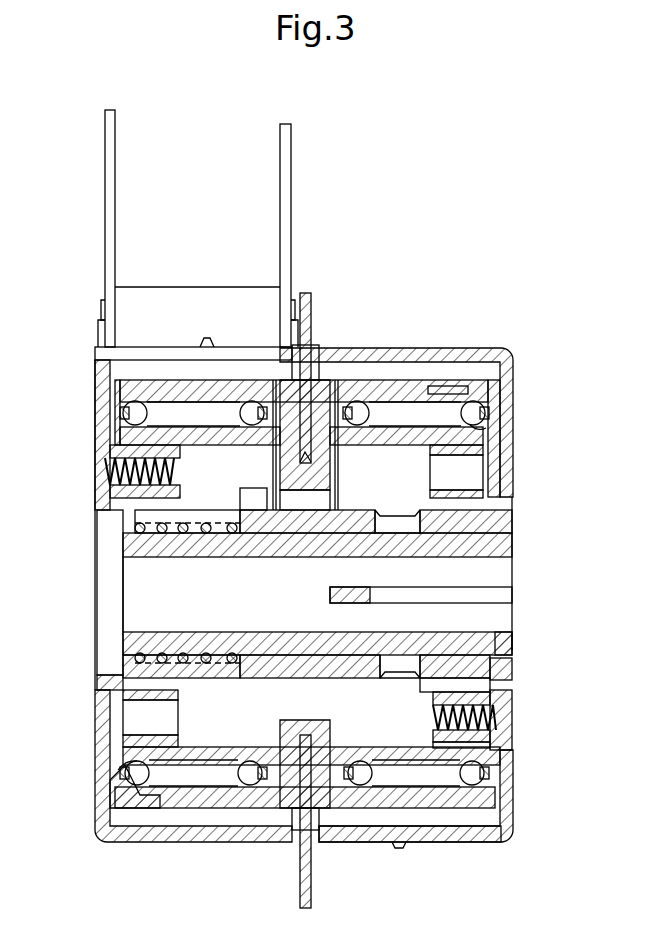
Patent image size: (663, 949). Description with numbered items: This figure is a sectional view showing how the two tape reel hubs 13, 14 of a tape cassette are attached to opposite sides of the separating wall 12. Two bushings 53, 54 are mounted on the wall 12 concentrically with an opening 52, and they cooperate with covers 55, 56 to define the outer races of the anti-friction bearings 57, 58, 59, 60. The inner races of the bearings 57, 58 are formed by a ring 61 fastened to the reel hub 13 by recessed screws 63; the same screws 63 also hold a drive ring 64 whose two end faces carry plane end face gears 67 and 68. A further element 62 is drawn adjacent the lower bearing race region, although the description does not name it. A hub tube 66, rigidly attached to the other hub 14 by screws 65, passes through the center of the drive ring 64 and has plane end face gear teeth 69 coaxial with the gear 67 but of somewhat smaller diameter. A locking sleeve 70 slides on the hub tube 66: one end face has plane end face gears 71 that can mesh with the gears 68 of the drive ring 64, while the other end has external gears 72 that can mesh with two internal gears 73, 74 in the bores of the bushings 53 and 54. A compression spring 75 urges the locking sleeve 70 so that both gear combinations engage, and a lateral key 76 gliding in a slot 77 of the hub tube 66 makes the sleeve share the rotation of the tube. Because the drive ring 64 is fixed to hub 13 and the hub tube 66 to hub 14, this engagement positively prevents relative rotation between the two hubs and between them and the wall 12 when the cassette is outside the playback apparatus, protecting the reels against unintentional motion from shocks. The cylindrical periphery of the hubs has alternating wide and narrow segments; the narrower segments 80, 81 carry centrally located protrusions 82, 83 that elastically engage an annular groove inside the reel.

The separating wall 12 is at (311, 305).
The tape reel hub 13 is at (506, 404).
The tape reel hub 14 is at (100, 793).
The opening 52 is at (306, 462).
The bushing 53 is at (402, 380).
The bushing 54 is at (212, 805).
The cover 55 is at (470, 395).
The cover 56 is at (148, 805).
The anti-friction bearing 57 is at (480, 420).
The anti-friction bearing 58 is at (357, 410).
The anti-friction bearing 59 is at (255, 786).
The anti-friction bearing 60 is at (137, 773).
The ring 61 is at (413, 428).
The lower inner race 62 is at (215, 748).
The recessed screw 63 is at (512, 712).
The drive ring 64 is at (486, 742).
The screw 65 is at (100, 478).
The hub tube 66 is at (97, 512).
The plane end face gear 67 is at (516, 670).
The plane end face gear 68 is at (414, 679).
The plane end face gear teeth 69 is at (497, 642).
The locking sleeve 70 is at (353, 520).
The plane end face gear 71 is at (382, 516).
The external gear 72 is at (250, 490).
The internal gear 73 is at (292, 495).
The internal gear 74 is at (318, 495).
The compression spring 75 is at (205, 524).
The lateral key 76 is at (350, 592).
The slot 77 is at (467, 596).
The narrow segment 80 is at (452, 842).
The narrow segment 81 is at (165, 360).
The protrusion 82 is at (398, 848).
The protrusion 83 is at (209, 343).